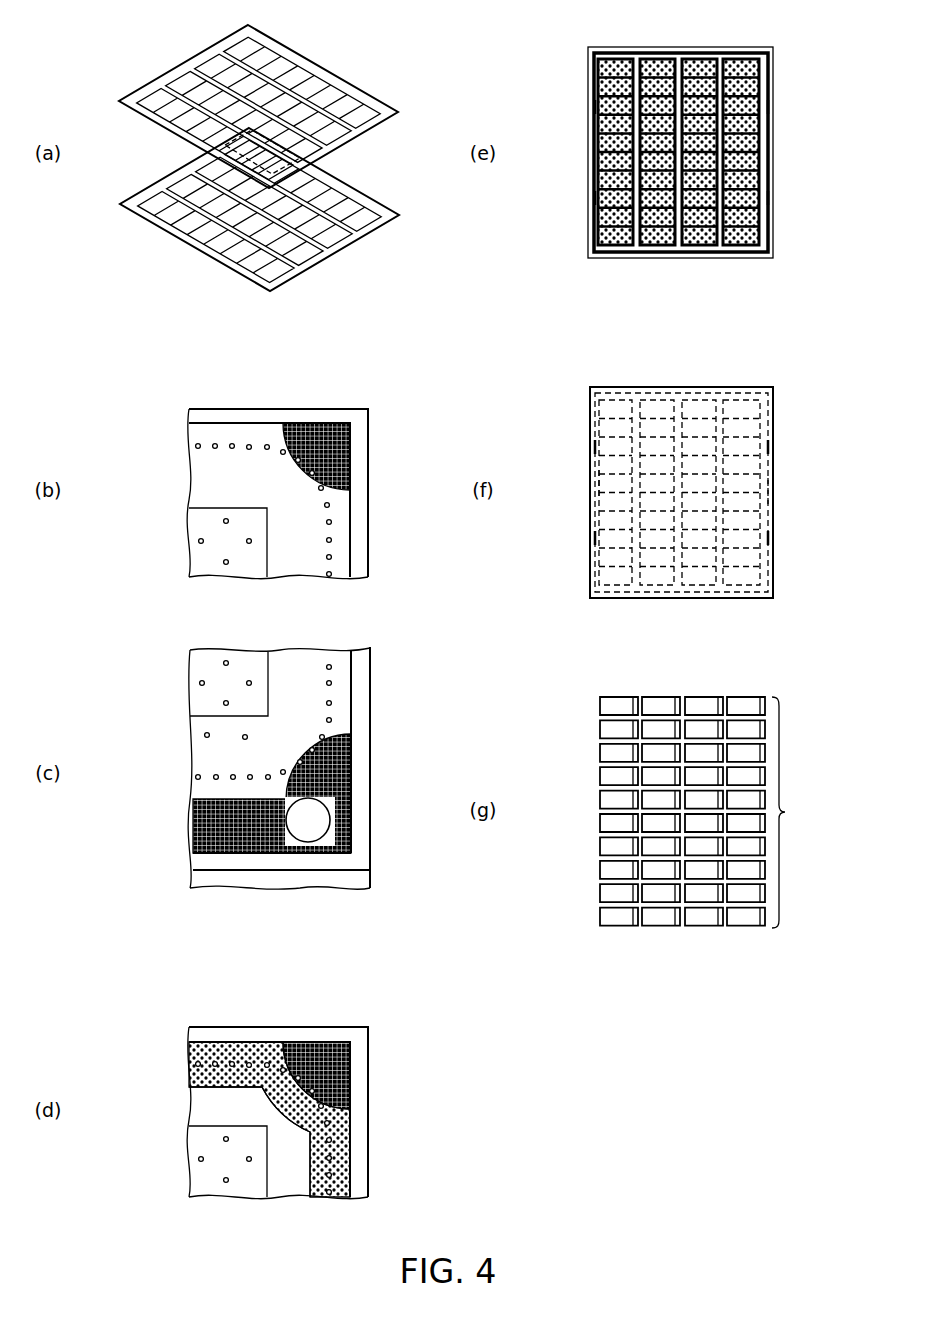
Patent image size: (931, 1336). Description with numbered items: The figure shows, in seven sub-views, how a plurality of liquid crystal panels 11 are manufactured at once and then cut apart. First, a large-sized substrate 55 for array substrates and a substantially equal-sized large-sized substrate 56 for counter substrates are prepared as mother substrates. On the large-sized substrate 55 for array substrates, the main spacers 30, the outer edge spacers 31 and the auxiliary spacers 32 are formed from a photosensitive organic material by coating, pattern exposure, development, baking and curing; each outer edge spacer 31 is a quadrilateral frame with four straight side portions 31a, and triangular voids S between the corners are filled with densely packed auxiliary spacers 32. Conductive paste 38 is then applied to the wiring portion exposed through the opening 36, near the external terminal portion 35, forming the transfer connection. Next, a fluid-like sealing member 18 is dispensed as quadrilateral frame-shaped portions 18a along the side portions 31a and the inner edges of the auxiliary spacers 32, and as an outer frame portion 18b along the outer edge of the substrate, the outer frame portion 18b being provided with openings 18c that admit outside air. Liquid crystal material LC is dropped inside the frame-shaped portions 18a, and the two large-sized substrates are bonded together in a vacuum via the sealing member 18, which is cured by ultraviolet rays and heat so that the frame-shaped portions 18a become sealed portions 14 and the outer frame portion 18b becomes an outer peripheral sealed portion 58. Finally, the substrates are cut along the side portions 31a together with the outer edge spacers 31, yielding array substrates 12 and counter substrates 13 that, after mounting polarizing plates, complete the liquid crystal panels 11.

The liquid crystal panel 11 is at (791, 812).
The array substrate 12 is at (610, 700).
The counter substrate 13 is at (633, 700).
The sealed portion 14 is at (600, 483).
The sealing member 18 is at (345, 1178).
The frame-shaped portion 18a is at (647, 59).
The outer frame portion 18b is at (757, 53).
The opening 18c is at (595, 107).
The main spacer 30 is at (215, 443).
The outer edge spacer 31 is at (347, 411).
The side portion 31a is at (242, 417).
The auxiliary spacer 32 is at (350, 467).
The external terminal portion 35 is at (263, 888).
The opening 36 is at (347, 797).
The conductive paste 38 is at (323, 823).
The large-sized substrate for array substrates 55 is at (300, 272).
The large-sized substrate for counter substrates 56 is at (282, 44).
The outer peripheral sealed portion 58 is at (768, 492).
The liquid crystal material LC is at (750, 145).
The void S is at (350, 448).